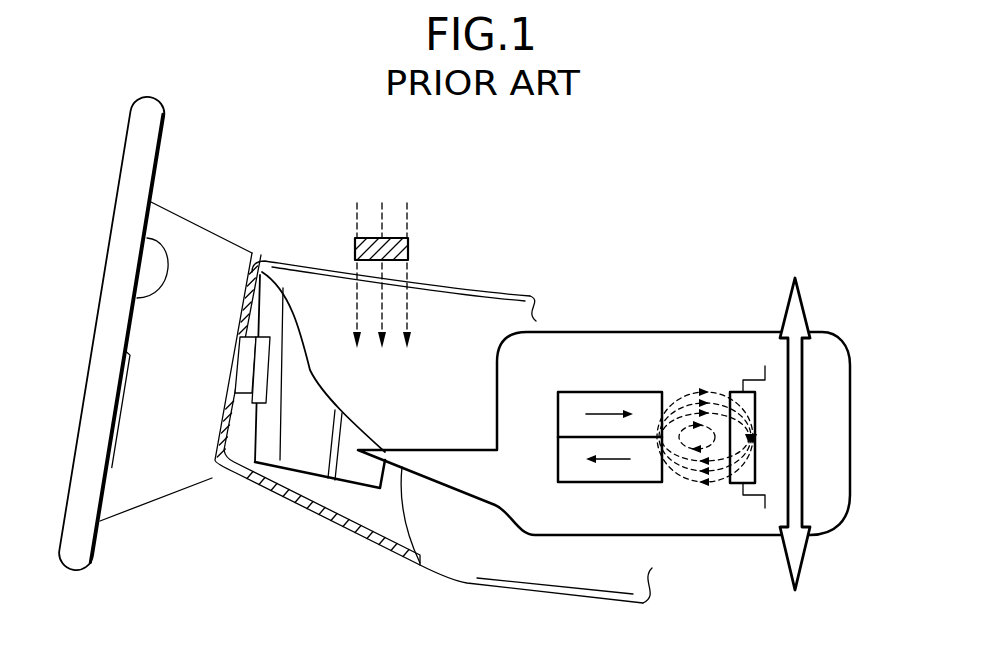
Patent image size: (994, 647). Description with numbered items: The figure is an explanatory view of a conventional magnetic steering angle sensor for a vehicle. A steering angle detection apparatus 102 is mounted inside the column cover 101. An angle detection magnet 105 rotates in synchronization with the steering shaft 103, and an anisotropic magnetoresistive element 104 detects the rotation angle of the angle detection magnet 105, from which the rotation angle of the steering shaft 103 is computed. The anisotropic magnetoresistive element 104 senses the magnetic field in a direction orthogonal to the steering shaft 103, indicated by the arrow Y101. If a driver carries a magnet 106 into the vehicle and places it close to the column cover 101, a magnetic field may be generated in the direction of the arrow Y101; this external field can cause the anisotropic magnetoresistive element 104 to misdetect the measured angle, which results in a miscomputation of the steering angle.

The column cover 101 is at (497, 293).
The steering angle detection apparatus 102 is at (355, 468).
The steering shaft 103 is at (243, 370).
The anisotropic magnetoresistive element 104 is at (757, 406).
The angle detection magnet 105 is at (642, 392).
The magnet 106 is at (409, 248).
The arrow Y101 is at (806, 372).